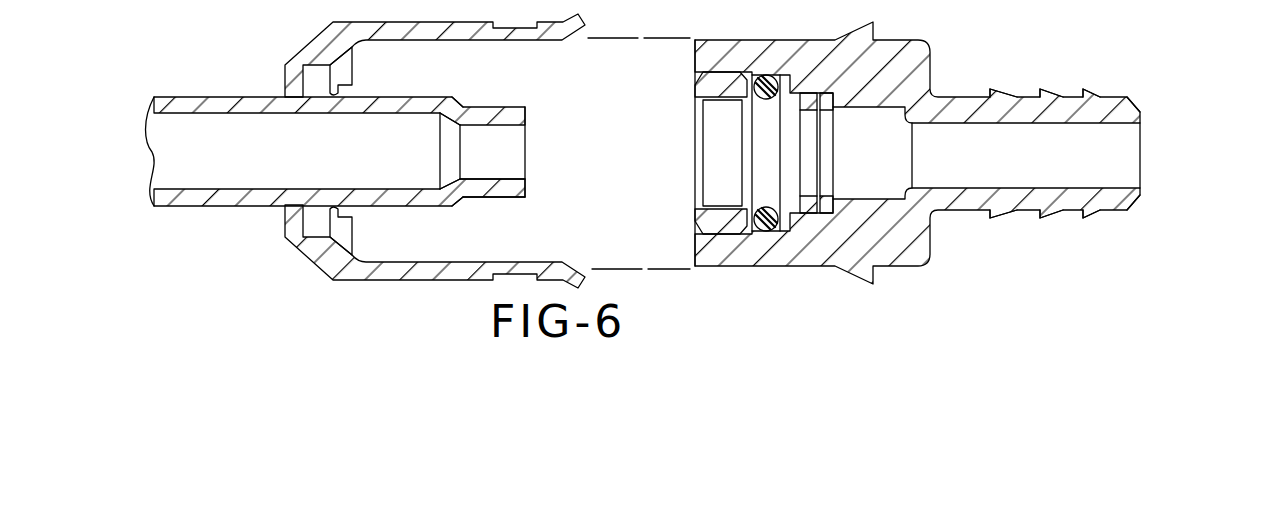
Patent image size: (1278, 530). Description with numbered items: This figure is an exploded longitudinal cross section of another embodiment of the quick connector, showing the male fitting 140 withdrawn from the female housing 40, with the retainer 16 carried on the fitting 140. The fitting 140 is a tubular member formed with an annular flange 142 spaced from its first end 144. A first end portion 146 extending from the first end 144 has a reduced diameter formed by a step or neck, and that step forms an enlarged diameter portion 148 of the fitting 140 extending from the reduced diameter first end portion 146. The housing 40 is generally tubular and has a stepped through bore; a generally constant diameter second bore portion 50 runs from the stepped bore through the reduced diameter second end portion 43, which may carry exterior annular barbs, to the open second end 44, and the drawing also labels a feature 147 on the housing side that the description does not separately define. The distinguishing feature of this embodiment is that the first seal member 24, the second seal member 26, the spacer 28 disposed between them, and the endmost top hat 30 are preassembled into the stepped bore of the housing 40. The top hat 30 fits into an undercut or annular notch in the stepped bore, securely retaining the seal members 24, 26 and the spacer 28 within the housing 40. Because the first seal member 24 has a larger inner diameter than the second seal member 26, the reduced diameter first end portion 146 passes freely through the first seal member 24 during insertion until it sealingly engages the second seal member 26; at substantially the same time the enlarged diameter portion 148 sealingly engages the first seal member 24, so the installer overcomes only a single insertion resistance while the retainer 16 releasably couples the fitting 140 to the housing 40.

The retainer 16 is at (312, 44).
The fitting 140 is at (190, 210).
The annular flange 142 is at (307, 222).
The first end 144 is at (524, 191).
The first end portion 146 is at (498, 199).
The enlarged diameter portion 148 is at (388, 204).
The top hat 30 is at (697, 223).
The first seal member 24 is at (774, 233).
The second seal member 26 is at (830, 200).
The spacer 28 is at (813, 214).
The housing 40 is at (925, 252).
The fitting 147 is at (1043, 48).
The second end portion 43 is at (1105, 103).
The second end 44 is at (1142, 122).
The second bore portion 50 is at (1143, 178).